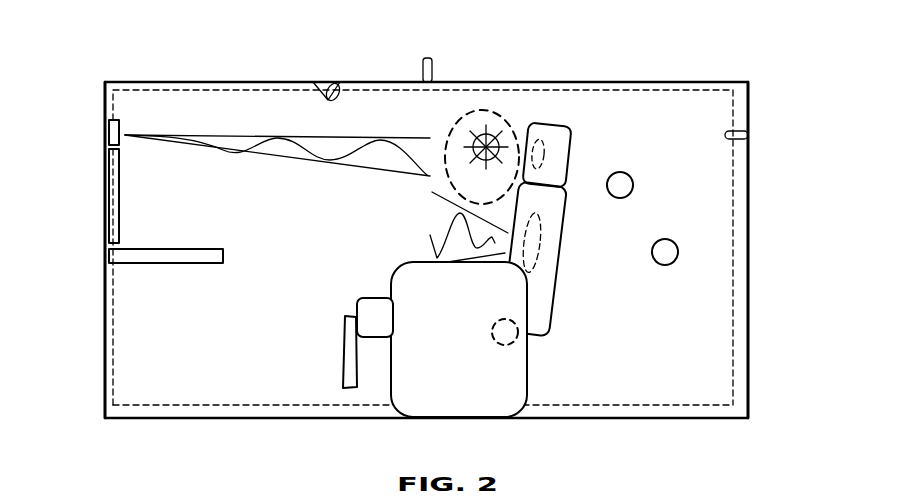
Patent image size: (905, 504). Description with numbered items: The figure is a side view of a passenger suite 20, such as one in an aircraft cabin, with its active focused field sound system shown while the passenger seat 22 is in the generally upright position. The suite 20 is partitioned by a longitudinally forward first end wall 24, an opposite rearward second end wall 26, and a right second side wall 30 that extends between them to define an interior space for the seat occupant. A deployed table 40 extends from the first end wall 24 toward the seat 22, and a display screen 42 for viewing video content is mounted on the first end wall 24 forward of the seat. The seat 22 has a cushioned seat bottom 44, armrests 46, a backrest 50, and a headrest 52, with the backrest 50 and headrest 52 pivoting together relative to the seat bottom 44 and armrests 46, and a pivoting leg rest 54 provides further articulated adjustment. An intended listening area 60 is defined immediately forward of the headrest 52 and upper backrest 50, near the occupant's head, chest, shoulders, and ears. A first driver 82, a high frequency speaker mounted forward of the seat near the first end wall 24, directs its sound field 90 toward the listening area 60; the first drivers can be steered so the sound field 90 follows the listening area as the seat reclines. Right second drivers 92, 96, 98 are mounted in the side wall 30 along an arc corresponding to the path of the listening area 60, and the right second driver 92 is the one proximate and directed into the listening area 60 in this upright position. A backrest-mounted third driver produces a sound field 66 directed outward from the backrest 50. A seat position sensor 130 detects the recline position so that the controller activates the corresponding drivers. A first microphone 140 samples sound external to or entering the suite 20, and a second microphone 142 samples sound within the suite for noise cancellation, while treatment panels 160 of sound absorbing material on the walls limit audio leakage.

The passenger suite 20 is at (688, 60).
The passenger seat 22 is at (578, 362).
The first end wall 24 is at (105, 360).
The second end wall 26 is at (748, 340).
The second side wall 30 is at (662, 136).
The table 40 is at (196, 265).
The display screen 42 is at (122, 190).
The seat bottom 44 is at (364, 298).
The armrests 46 is at (398, 262).
The backrest 50 is at (553, 290).
The headrest 52 is at (572, 136).
The leg rest 54 is at (345, 357).
The intended listening area 60 is at (514, 119).
The sound field 66 is at (445, 228).
The first driver 82 is at (122, 127).
The sound field 90 is at (367, 172).
The right second driver 92 is at (484, 133).
The right second driver 96 is at (620, 198).
The right second driver 98 is at (665, 265).
The seat position sensor 130 is at (495, 342).
The first microphone 140 is at (420, 70).
The second microphone 142 is at (735, 140).
The treatment panels 160 is at (183, 403).